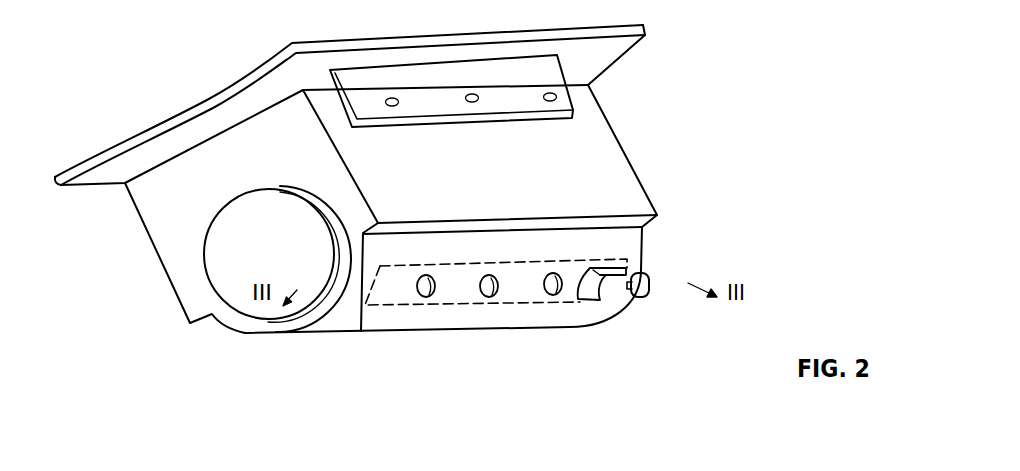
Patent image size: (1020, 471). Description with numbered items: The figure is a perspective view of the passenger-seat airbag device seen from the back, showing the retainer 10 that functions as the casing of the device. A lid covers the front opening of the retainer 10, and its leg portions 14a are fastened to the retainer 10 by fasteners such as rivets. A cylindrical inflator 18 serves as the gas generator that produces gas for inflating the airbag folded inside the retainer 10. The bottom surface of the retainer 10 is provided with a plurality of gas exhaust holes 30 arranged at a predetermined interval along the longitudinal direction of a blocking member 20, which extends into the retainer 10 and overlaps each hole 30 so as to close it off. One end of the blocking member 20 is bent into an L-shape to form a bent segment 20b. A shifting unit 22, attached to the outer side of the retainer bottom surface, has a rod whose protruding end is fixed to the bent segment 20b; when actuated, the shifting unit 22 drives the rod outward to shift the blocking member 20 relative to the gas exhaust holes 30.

The retainer 10 is at (613, 170).
The leg portions 14a is at (510, 98).
The cylindrical inflator 18 is at (237, 230).
The blocking member 20 is at (385, 307).
The bent segment 20b is at (648, 278).
The shifting unit 22 is at (602, 292).
The gas exhaust holes 30 is at (430, 297).